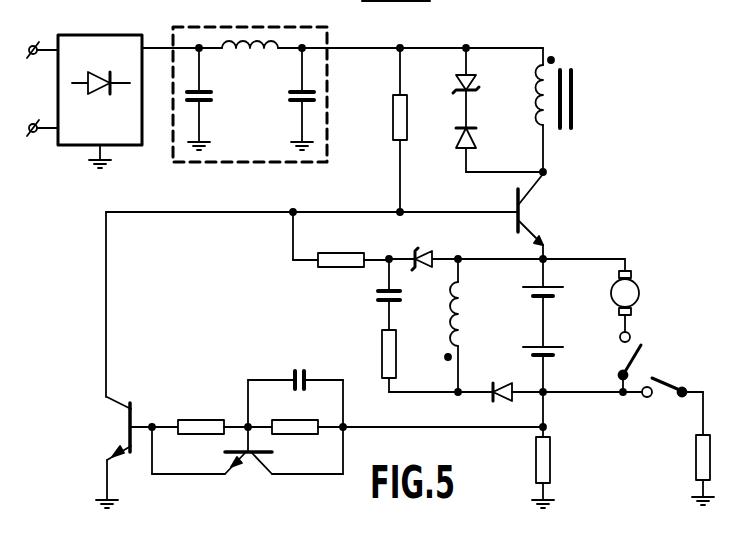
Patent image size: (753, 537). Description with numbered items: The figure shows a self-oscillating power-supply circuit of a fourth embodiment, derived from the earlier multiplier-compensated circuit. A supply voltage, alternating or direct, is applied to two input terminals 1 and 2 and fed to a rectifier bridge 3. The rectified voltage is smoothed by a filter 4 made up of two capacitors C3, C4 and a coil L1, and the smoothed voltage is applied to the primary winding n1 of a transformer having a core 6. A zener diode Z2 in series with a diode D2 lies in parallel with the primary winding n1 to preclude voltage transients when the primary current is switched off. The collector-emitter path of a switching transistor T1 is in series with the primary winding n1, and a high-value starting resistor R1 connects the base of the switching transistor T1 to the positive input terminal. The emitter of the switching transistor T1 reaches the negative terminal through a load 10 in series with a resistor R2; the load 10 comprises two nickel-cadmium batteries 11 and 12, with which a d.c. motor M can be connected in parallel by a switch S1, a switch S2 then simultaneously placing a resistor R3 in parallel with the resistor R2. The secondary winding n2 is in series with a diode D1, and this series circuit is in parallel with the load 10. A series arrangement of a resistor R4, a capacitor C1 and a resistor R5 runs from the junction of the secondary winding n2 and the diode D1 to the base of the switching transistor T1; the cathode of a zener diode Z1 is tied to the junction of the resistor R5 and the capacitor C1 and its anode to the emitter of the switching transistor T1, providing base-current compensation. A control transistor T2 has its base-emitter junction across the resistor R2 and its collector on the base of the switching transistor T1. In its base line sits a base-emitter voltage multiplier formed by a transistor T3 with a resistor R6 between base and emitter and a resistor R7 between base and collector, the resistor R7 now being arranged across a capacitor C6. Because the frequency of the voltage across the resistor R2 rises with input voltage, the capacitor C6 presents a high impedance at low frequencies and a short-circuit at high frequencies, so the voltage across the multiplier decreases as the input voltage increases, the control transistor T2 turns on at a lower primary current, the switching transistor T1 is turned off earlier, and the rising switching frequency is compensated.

The input terminal 1 is at (33, 45).
The input terminal 2 is at (33, 123).
The rectifier bridge 3 is at (93, 34).
The filter 4 is at (212, 27).
The core 6 is at (576, 88).
The load 10 is at (591, 326).
The nickel-cadmium battery 11 is at (540, 300).
The nickel-cadmium battery 12 is at (538, 354).
The coil L1 is at (252, 52).
The capacitor C1 is at (378, 298).
The capacitor C3 is at (210, 104).
The capacitor C4 is at (293, 104).
The capacitor C6 is at (293, 370).
The resistor R1 is at (393, 108).
The resistor R2 is at (535, 456).
The resistor R3 is at (695, 452).
The resistor R4 is at (381, 364).
The resistor R5 is at (345, 252).
The resistor R6 is at (200, 419).
The resistor R7 is at (286, 419).
The switching transistor T1 is at (528, 210).
The control transistor T2 is at (125, 427).
The transistor T3 is at (250, 458).
The zener diode Z1 is at (417, 232).
The zener diode Z2 is at (455, 84).
The diode D1 is at (493, 402).
The diode D2 is at (456, 137).
The primary winding n1 is at (540, 105).
The secondary winding n2 is at (453, 300).
The d.c. motor M is at (639, 296).
The switch S1 is at (620, 364).
The switch S2 is at (673, 378).